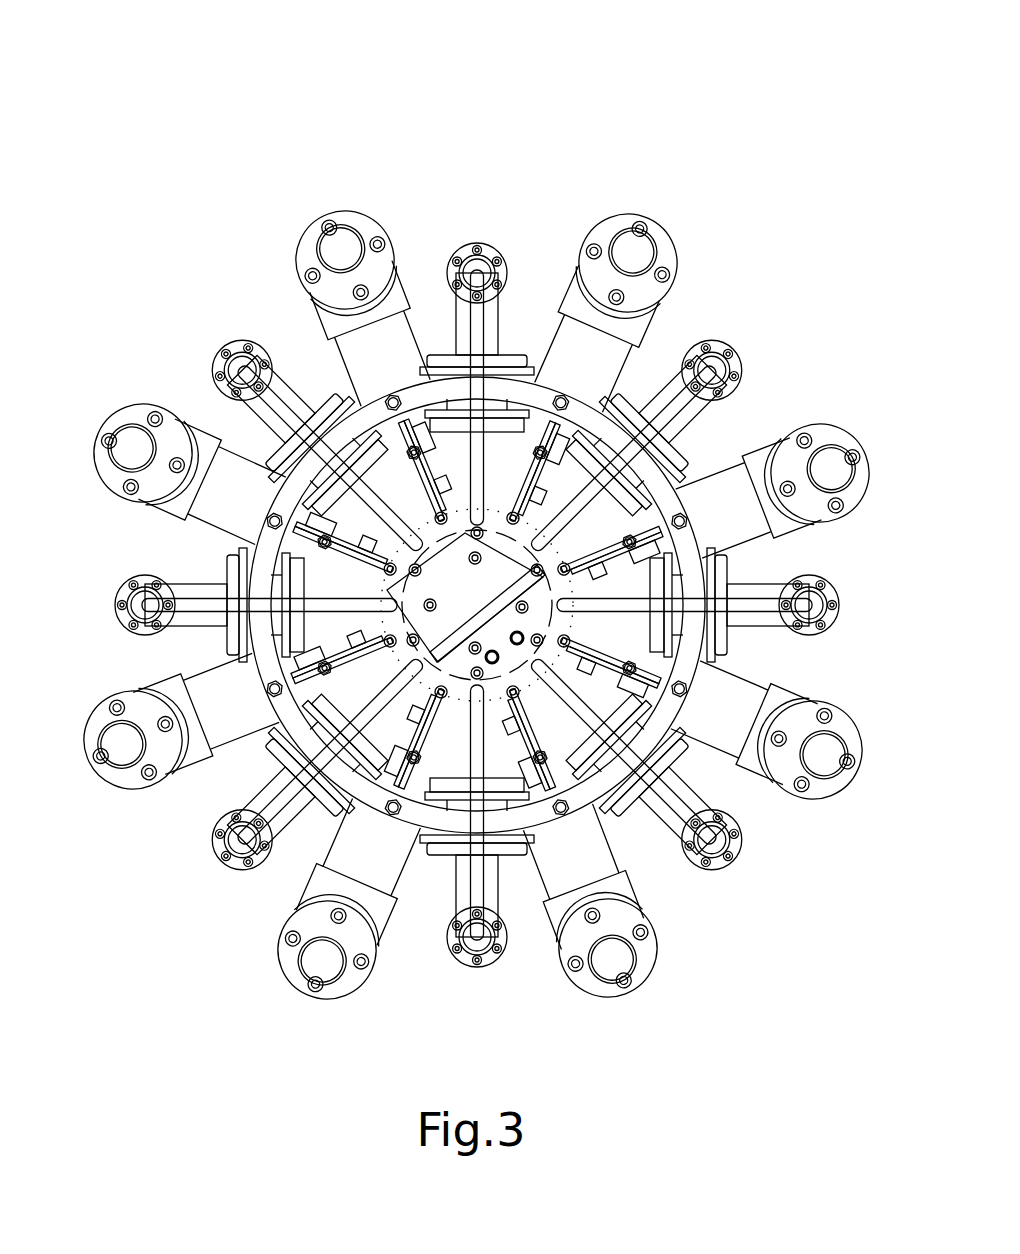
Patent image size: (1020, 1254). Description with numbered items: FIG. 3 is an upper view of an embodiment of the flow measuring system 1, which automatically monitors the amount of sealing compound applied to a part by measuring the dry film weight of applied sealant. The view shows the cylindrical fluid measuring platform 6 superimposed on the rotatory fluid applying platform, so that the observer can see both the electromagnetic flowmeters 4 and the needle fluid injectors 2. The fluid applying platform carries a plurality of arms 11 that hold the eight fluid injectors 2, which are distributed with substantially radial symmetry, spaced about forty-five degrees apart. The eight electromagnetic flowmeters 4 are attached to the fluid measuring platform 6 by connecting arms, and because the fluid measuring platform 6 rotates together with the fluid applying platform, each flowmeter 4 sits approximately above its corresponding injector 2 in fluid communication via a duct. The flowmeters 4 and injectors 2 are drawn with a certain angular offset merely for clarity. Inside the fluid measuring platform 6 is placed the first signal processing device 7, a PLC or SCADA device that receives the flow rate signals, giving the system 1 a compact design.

The system 1 is at (493, 200).
The fluid injectors 2 is at (340, 252).
The electromagnetic flowmeters 4 is at (732, 342).
The fluid measuring platform 6 is at (662, 480).
The first signal processing device 7 is at (617, 807).
The arms 11 is at (375, 350).